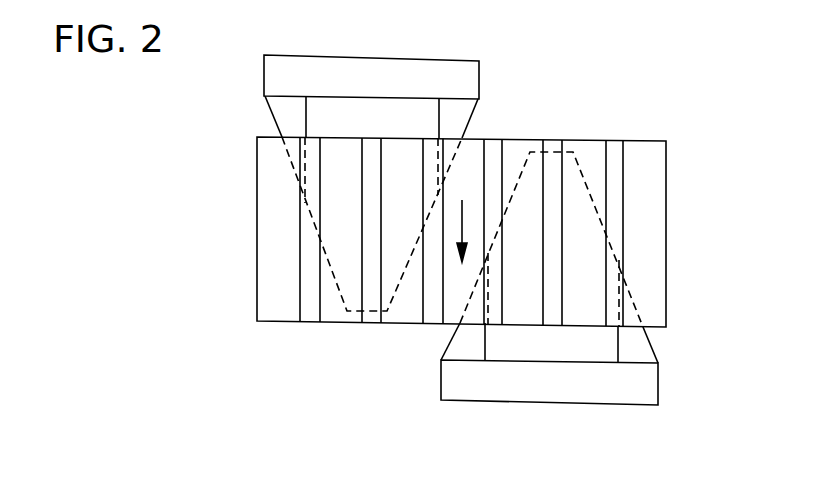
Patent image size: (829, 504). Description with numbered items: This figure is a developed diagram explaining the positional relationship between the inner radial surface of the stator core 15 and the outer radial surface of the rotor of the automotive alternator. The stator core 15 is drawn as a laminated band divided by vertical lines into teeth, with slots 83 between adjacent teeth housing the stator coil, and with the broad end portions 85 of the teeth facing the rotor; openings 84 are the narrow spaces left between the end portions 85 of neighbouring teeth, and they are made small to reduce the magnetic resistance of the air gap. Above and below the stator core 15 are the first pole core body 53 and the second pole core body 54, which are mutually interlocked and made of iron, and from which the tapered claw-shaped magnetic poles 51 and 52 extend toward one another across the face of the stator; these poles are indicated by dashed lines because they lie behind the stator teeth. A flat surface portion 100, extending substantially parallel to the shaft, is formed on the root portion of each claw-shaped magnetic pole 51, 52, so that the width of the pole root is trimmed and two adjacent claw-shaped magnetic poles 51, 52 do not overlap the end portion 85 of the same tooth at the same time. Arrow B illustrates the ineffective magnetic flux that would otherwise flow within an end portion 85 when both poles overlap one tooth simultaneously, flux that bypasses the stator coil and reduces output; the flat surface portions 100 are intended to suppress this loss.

The stator core 15 is at (673, 158).
The claw-shaped magnetic pole 51 is at (333, 223).
The claw-shaped magnetic pole 52 is at (585, 250).
The first pole core body 53 is at (375, 73).
The second pole core body 54 is at (623, 390).
The slot 83 is at (555, 143).
The opening 84 is at (310, 320).
The end portion 85 is at (268, 320).
The flat surface portion 100 is at (305, 112).
The arrow indicating ineffective magnetic flux B is at (463, 217).